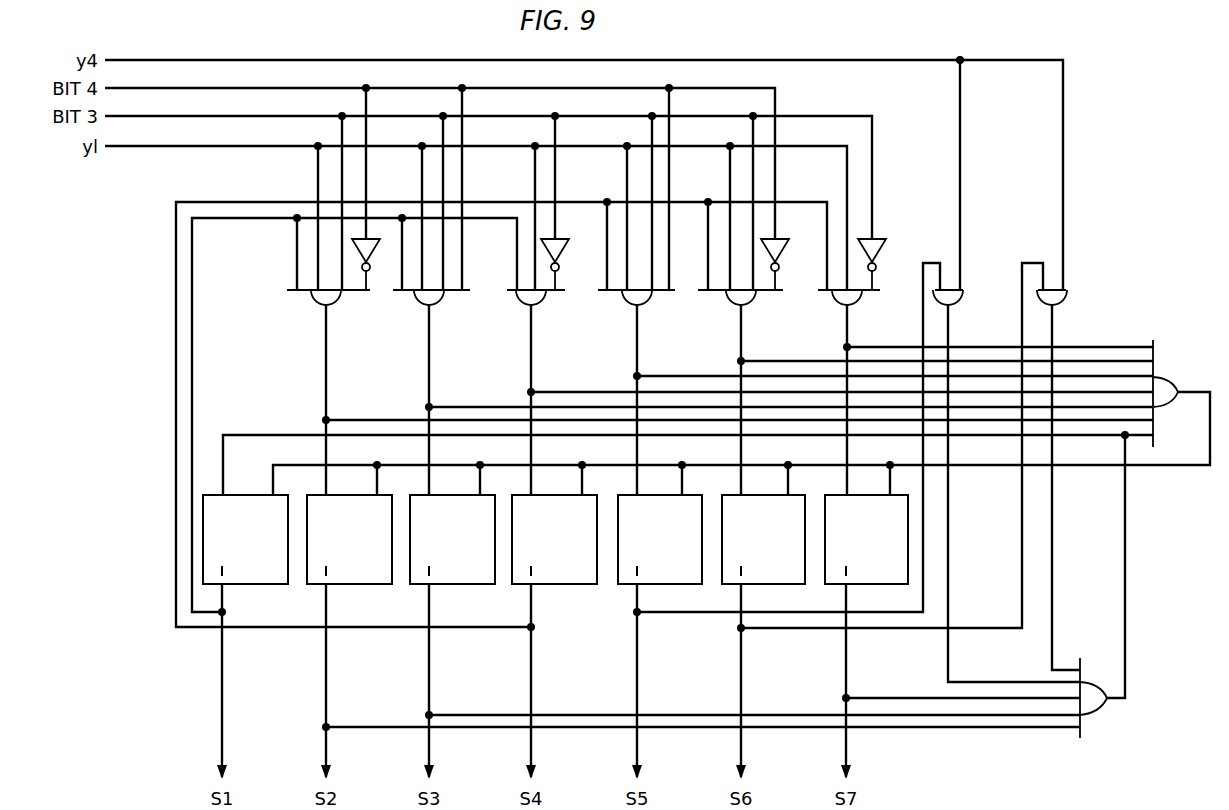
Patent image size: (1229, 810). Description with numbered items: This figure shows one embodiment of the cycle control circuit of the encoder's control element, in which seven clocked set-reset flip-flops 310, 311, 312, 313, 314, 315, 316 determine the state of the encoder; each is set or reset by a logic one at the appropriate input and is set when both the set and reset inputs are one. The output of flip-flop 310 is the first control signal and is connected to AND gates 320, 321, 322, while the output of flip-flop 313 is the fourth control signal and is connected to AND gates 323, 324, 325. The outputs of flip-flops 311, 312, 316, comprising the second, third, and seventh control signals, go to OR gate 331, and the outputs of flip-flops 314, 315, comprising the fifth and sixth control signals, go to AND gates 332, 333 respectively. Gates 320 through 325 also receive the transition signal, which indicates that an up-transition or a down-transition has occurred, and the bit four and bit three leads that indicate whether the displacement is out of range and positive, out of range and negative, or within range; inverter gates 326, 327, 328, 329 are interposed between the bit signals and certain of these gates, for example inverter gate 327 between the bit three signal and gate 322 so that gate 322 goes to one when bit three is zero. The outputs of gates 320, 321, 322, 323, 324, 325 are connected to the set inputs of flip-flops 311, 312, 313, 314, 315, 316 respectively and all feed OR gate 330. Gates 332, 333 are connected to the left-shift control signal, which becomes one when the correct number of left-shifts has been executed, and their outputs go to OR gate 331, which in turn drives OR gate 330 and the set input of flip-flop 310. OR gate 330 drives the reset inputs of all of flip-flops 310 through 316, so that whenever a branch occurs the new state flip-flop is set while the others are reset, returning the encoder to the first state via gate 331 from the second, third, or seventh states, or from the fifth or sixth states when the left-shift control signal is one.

The flip-flop 310 is at (240, 585).
The flip-flop 311 is at (344, 585).
The flip-flop 312 is at (447, 585).
The flip-flop 313 is at (549, 585).
The flip-flop 314 is at (655, 585).
The flip-flop 315 is at (759, 585).
The flip-flop 316 is at (864, 585).
The AND gate 320 is at (338, 298).
The AND gate 321 is at (441, 298).
The AND gate 322 is at (543, 298).
The AND gate 323 is at (649, 298).
The AND gate 324 is at (753, 298).
The AND gate 325 is at (859, 298).
The inverter gate 326 is at (376, 250).
The inverter gate 327 is at (565, 250).
The inverter gate 328 is at (785, 250).
The inverter gate 329 is at (882, 250).
The OR gate 330 is at (1163, 378).
The OR gate 331 is at (1097, 712).
The AND gate 332 is at (960, 298).
The AND gate 333 is at (1064, 298).